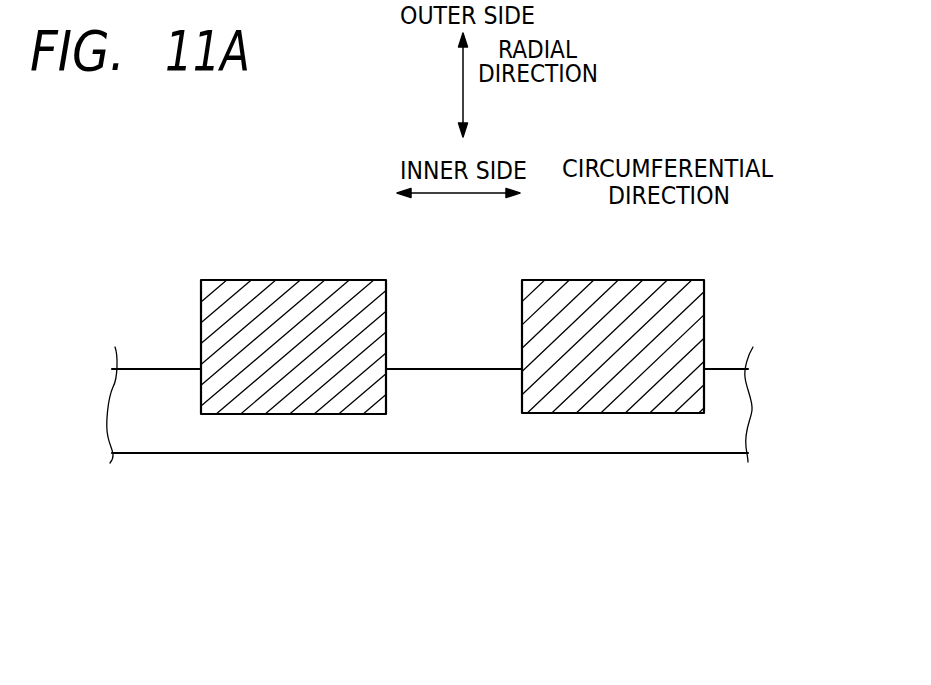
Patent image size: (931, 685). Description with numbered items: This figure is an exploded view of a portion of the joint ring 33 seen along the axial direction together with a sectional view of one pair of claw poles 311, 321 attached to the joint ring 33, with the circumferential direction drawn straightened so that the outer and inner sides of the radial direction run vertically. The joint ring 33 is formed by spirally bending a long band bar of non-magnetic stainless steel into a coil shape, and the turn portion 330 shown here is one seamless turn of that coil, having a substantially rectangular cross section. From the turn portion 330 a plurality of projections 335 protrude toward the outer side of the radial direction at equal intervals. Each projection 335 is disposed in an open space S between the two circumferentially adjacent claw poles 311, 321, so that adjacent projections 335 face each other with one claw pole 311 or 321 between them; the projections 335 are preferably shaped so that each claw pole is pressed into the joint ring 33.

The joint ring 33 is at (478, 475).
The claw pole 311 is at (305, 308).
The claw pole 321 is at (623, 307).
The turn portion 330 is at (353, 435).
The projection 335 is at (133, 382).
The open space S is at (122, 337).